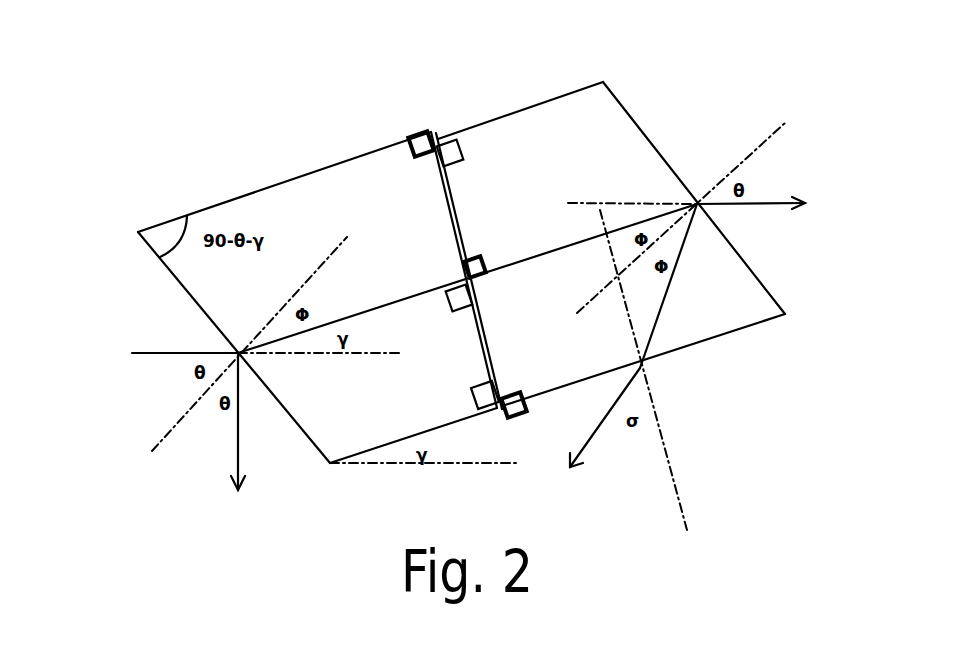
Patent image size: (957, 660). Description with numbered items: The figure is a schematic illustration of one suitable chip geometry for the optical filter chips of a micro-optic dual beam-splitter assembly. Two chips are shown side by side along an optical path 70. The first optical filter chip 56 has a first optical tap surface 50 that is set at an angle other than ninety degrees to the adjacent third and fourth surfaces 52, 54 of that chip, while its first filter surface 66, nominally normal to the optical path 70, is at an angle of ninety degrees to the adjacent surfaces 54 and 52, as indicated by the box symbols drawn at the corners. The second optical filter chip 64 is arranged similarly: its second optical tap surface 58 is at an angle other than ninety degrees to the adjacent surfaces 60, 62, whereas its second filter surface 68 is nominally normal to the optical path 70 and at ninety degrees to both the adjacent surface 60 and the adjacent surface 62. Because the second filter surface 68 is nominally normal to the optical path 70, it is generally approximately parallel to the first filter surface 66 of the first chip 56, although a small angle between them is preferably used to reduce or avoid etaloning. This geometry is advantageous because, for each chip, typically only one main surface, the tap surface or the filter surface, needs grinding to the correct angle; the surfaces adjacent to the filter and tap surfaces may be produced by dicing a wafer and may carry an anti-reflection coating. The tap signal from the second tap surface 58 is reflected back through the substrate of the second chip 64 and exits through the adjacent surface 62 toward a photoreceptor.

The first optical tap surface 50 is at (193, 297).
The third surface 52 is at (277, 171).
The fourth surface 54 is at (440, 432).
The first optical filter chip 56 is at (377, 160).
The second optical tap surface 58 is at (667, 158).
The adjacent surface 60 is at (573, 92).
The adjacent surface 62 is at (600, 385).
The second optical filter chip 64 is at (730, 320).
The first filter surface 66 is at (432, 137).
The second filter surface 68 is at (510, 410).
The optical path 70 is at (410, 298).